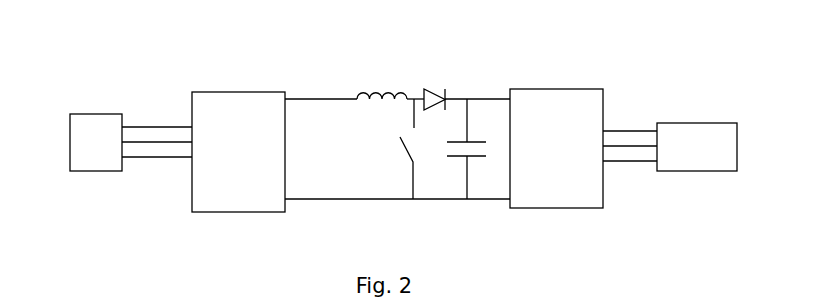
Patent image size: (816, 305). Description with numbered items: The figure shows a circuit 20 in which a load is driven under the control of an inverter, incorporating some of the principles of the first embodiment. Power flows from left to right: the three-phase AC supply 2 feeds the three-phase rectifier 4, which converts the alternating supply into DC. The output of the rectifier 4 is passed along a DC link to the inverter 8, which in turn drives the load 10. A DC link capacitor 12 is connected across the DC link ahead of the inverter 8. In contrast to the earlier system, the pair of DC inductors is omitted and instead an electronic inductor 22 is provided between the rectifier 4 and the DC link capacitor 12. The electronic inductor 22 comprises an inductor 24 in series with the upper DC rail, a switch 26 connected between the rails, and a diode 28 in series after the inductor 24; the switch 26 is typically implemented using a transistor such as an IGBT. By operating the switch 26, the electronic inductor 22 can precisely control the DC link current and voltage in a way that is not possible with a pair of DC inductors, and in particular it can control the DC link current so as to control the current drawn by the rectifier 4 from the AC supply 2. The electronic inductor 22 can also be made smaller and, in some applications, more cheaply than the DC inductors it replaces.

The 3-phase AC supply 2 is at (70, 156).
The 3-phase rectifier 4 is at (211, 213).
The inverter 8 is at (604, 108).
The load 10 is at (725, 122).
The DC link capacitor 12 is at (477, 157).
The circuit 20 is at (687, 219).
The electronic inductor 22 is at (428, 58).
The inductor 24 is at (370, 99).
The switch 26 is at (407, 155).
The diode 28 is at (425, 98).